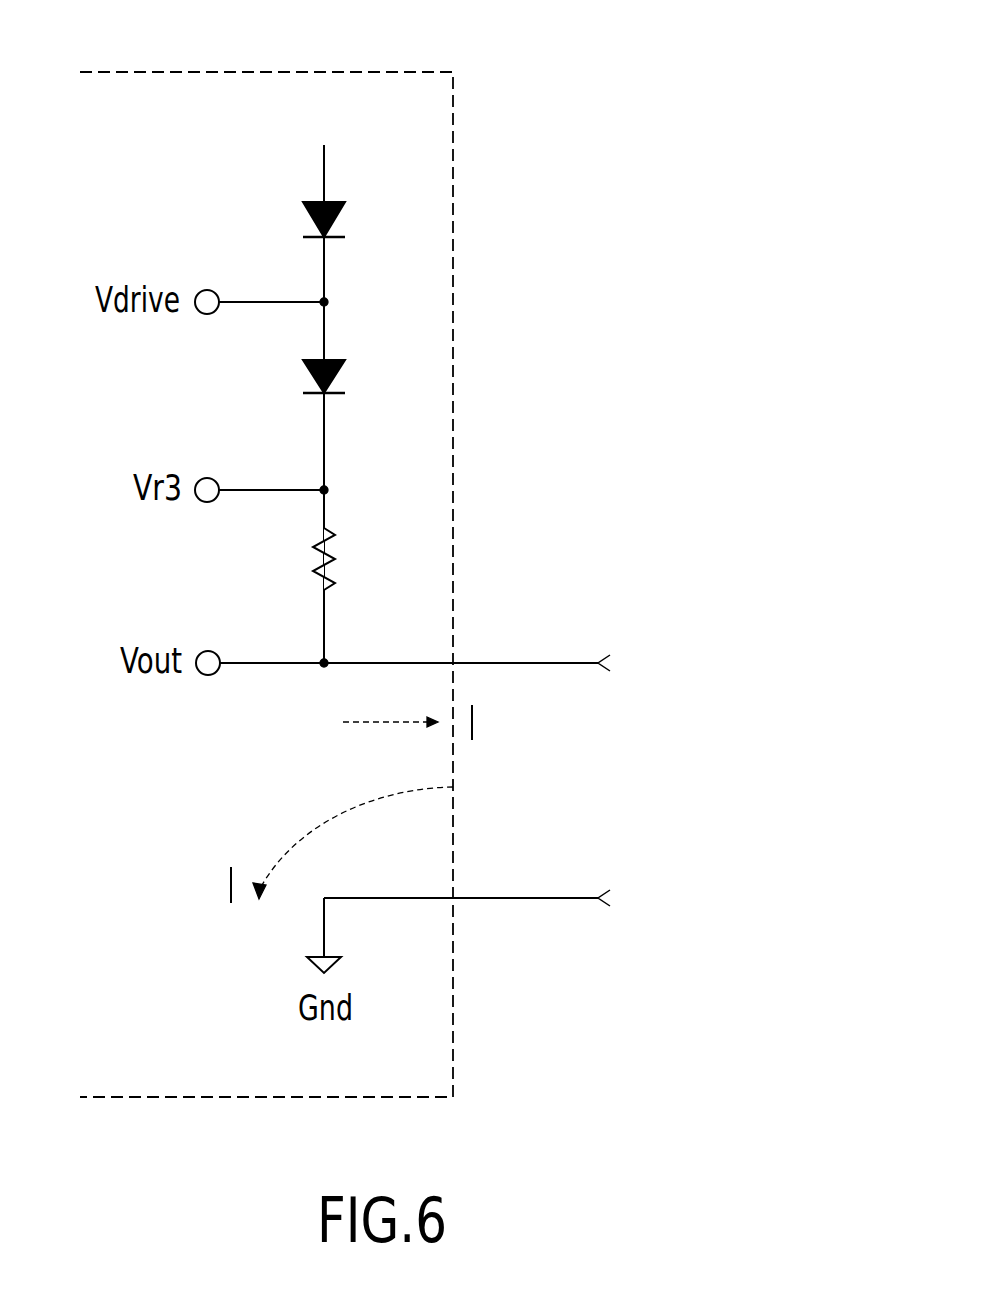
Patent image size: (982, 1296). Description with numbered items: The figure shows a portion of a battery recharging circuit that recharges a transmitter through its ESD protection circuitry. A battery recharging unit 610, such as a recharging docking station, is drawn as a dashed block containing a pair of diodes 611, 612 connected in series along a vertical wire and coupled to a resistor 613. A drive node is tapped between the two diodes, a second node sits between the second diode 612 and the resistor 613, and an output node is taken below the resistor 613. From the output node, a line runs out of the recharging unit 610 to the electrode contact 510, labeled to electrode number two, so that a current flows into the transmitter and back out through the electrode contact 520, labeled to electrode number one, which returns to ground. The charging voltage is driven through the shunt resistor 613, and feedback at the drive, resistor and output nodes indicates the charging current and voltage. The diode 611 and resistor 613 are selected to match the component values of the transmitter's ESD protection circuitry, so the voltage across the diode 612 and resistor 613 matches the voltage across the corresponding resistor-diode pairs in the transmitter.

The battery recharging unit 610 is at (351, 72).
The diode 611 is at (313, 203).
The diode 612 is at (320, 395).
The resistor 613 is at (316, 558).
The electrode contact 510 is at (519, 661).
The electrode contact 520 is at (524, 902).